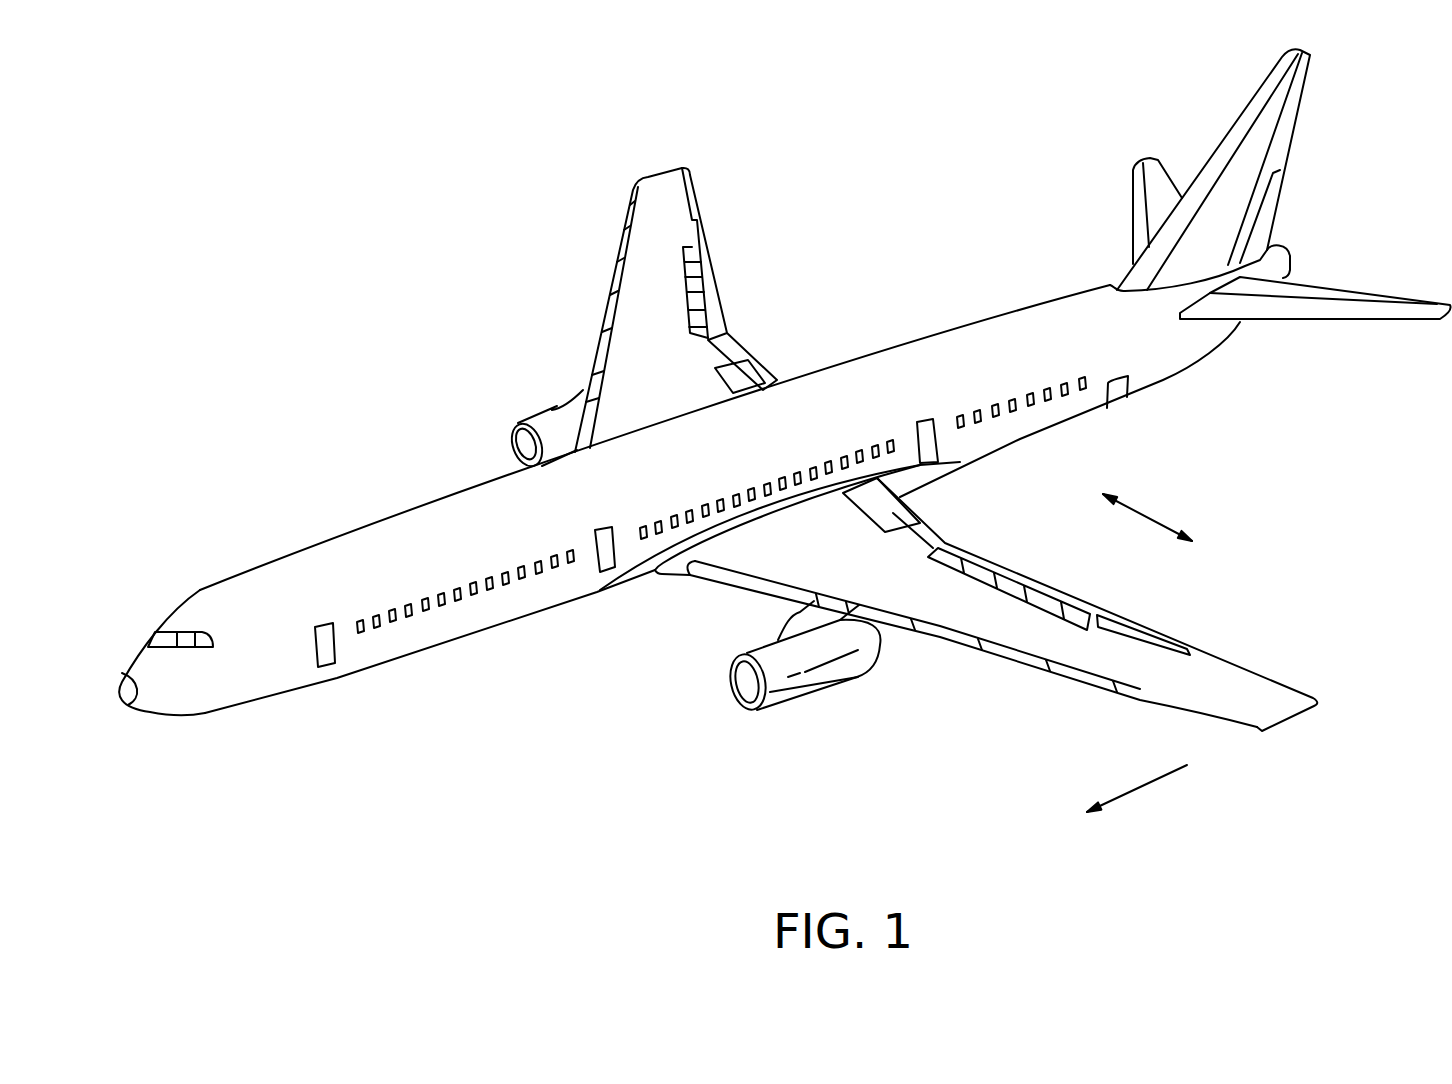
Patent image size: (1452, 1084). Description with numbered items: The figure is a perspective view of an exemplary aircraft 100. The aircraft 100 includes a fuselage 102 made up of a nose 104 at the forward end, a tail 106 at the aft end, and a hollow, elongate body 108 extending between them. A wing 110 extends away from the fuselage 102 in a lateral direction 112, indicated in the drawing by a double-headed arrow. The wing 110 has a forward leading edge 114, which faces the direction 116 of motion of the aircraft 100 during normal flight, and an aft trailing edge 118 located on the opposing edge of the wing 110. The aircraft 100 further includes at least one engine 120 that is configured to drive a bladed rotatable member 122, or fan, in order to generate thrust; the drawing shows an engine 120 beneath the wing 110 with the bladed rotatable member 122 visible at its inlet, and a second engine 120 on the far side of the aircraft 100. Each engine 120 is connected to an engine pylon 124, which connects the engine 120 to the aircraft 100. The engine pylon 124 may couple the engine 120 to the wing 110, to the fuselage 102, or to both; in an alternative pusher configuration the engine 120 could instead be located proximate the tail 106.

The aircraft 100 is at (358, 330).
The fuselage 102 is at (848, 378).
The nose 104 is at (202, 603).
The tail 106 is at (1163, 380).
The hollow, elongate body 108 is at (541, 544).
The wing 110 is at (1037, 645).
The lateral direction 112 is at (1153, 515).
The forward leading edge 114 is at (1200, 712).
The direction of motion 116 is at (1150, 783).
The aft trailing edge 118 is at (1240, 663).
The engine 120 is at (780, 687).
The bladed rotatable member 122 is at (743, 683).
The engine pylon 124 is at (797, 627).